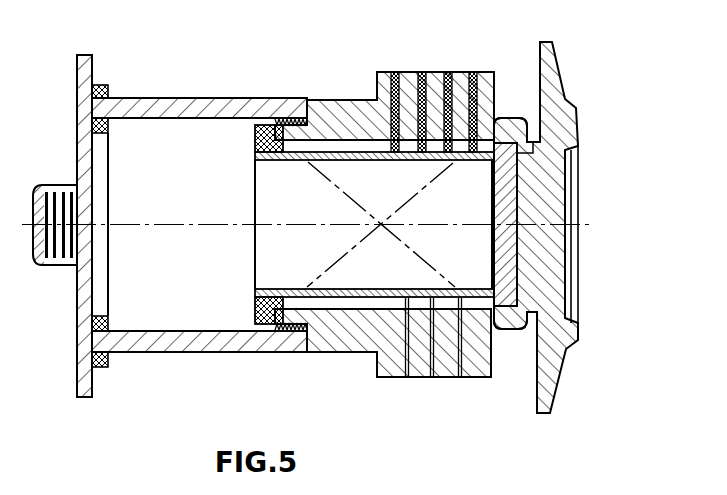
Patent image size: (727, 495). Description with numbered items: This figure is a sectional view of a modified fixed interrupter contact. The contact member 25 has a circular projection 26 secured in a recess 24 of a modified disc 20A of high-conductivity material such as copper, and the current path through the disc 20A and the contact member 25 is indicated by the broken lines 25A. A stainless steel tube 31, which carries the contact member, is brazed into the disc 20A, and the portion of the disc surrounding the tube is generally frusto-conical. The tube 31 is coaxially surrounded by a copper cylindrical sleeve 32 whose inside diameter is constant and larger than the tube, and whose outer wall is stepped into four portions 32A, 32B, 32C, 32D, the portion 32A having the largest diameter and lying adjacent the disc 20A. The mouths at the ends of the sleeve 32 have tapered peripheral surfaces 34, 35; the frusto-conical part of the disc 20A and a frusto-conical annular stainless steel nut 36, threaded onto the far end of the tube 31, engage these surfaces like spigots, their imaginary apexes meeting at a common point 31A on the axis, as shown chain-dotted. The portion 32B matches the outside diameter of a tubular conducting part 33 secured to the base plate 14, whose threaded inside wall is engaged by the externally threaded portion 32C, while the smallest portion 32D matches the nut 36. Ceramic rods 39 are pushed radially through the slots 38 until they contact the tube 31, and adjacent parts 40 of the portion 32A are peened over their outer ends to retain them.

The base plate 14 is at (79, 131).
The modified disc 20A is at (521, 128).
The recess 24 is at (530, 190).
The contact member 25 is at (545, 414).
The broken lines 25A is at (600, 231).
The circular projection 26 is at (523, 232).
The stainless steel tube 31 is at (296, 163).
The point on the axis 31A is at (384, 228).
The cylindrical sleeve 32 is at (370, 356).
The largest diameter portion 32A is at (477, 366).
The second largest portion 32B is at (342, 350).
The externally threaded portion 32C is at (305, 330).
The smallest diameter portion 32D is at (273, 328).
The tubular conducting part 33 is at (164, 349).
The tapered peripheral surface 34 is at (493, 120).
The tapered peripheral surface 35 is at (276, 119).
The annular stainless steel nut 36 is at (256, 136).
The oblique intermediate slots 38 is at (458, 378).
The ceramic rods 39 is at (447, 72).
The peened-over parts 40 is at (395, 72).